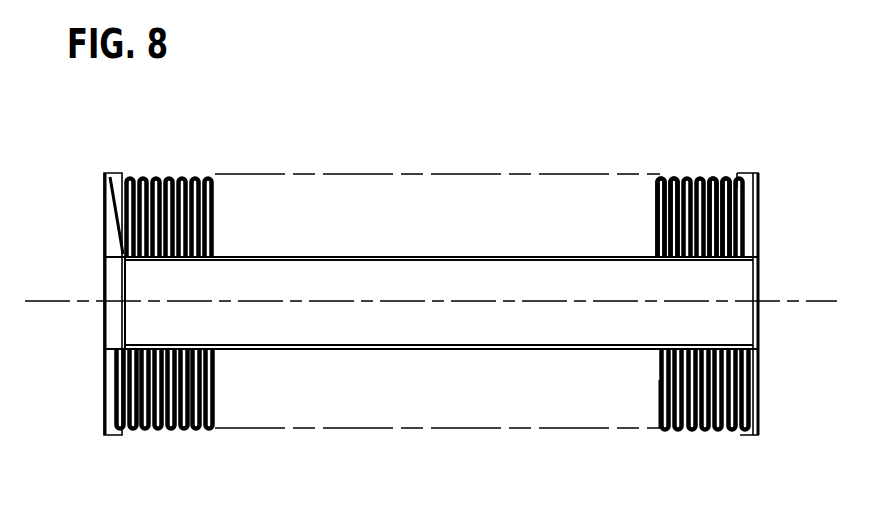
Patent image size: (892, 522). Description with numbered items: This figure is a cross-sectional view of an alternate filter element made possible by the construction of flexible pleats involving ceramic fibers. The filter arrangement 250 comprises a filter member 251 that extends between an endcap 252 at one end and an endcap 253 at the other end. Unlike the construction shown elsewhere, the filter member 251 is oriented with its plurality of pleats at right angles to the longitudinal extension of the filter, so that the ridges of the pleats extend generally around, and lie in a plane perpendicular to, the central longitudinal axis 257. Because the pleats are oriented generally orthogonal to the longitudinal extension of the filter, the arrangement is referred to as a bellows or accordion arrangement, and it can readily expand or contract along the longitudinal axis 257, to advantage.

The filter arrangement 250 is at (398, 153).
The filter member 251 is at (677, 178).
The endcap 252 is at (758, 238).
The endcap 253 is at (104, 237).
The central longitudinal axis 257 is at (795, 302).